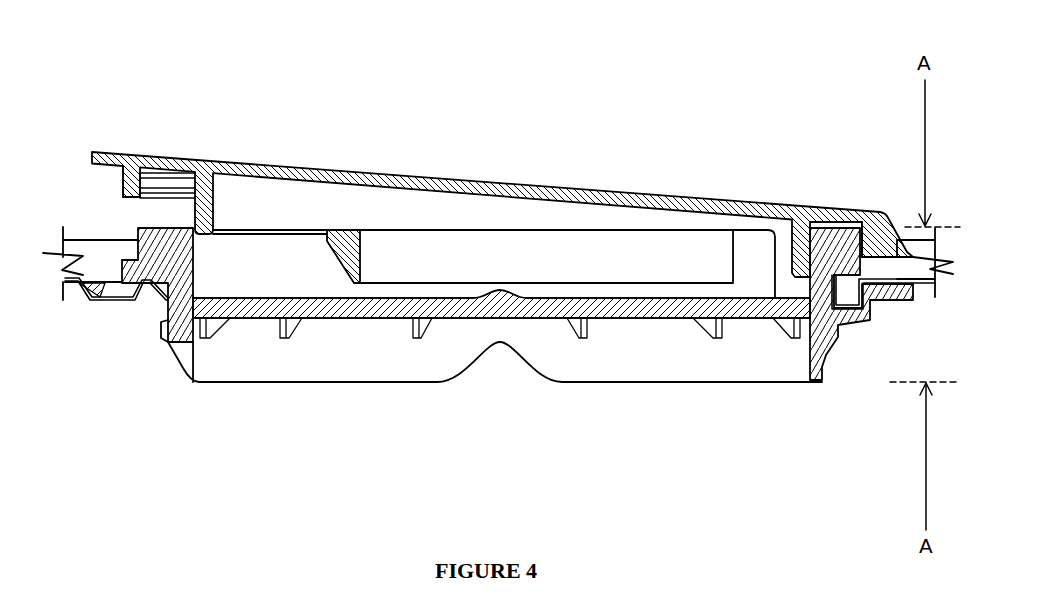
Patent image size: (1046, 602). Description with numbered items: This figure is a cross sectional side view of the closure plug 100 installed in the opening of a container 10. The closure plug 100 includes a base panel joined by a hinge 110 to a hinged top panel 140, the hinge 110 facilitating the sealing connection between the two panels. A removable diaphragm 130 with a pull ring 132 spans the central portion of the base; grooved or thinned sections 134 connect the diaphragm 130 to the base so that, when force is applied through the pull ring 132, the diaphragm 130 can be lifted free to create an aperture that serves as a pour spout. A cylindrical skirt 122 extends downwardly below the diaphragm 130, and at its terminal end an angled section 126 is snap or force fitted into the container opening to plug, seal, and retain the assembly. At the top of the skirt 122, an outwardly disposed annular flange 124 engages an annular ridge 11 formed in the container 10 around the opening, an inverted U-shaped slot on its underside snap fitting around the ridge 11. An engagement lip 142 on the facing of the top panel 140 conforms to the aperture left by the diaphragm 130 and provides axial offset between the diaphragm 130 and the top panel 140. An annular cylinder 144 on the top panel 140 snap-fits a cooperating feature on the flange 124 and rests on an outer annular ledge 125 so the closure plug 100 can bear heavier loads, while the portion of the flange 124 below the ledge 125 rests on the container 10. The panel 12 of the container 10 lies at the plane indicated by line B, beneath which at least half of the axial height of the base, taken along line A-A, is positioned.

The closure plug 100 is at (444, 157).
The container 10 is at (893, 285).
The annular ridge 11 is at (857, 465).
The vehicle body panel 12 is at (93, 472).
The hinge 110 is at (880, 243).
The cylindrical skirt 122 is at (165, 323).
The annular flange 124 is at (820, 257).
The outer annular ledge 125 is at (116, 390).
The angled section 126 is at (843, 280).
The removable diaphragm 130 is at (626, 320).
The pull ring 132 is at (590, 248).
The thinned sections 134 is at (228, 316).
The top panel 140 is at (322, 178).
The engagement lip 142 is at (190, 190).
The annular cylinder 144 is at (135, 177).